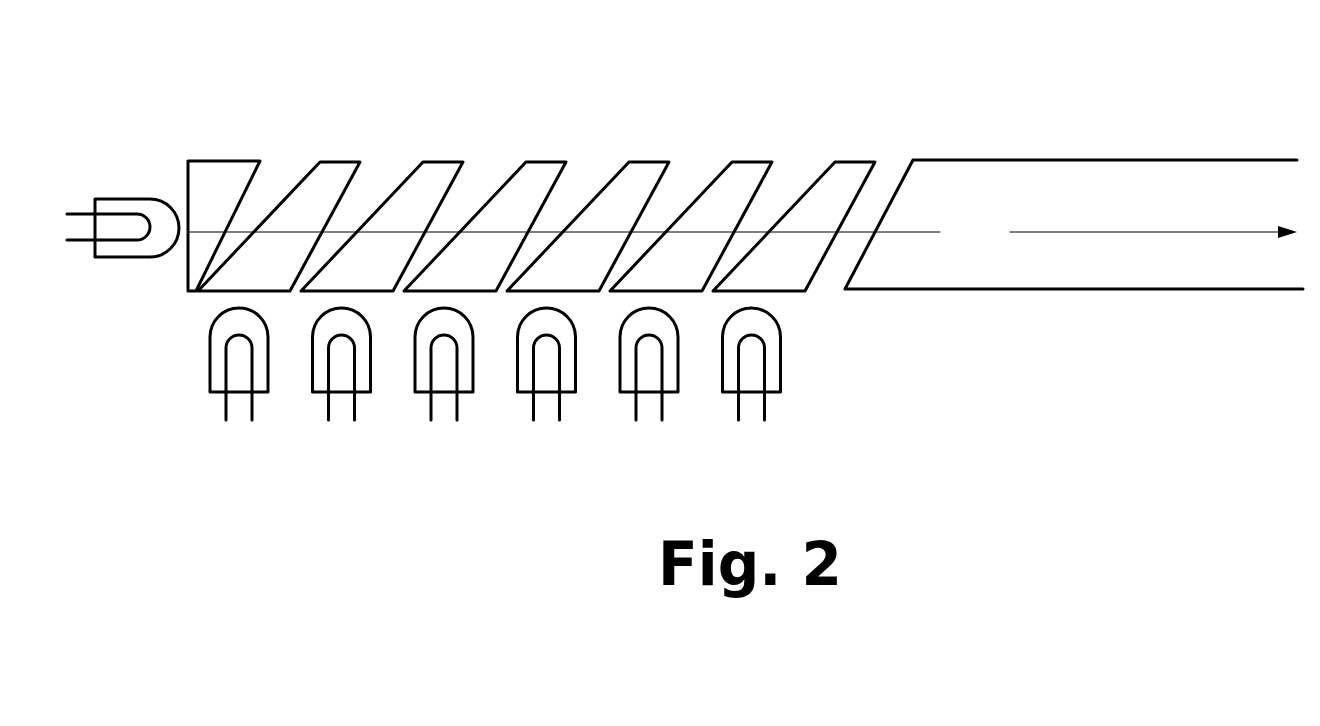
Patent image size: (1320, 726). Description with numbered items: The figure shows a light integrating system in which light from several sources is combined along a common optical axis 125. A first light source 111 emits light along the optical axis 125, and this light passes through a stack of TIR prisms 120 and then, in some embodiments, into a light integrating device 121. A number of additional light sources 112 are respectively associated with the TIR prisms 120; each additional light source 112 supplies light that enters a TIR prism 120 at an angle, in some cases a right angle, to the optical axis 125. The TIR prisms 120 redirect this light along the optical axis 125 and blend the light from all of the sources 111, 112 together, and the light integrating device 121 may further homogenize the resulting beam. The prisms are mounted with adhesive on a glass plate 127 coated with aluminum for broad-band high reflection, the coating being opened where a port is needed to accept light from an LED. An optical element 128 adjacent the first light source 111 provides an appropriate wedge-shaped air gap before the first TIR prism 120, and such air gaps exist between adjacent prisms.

The first light source 111 is at (117, 252).
The additional light sources 112 is at (620, 372).
The TIR prisms 120 is at (760, 172).
The light integrating device 121 is at (1072, 172).
The optical axis 125 is at (742, 233).
The glass plate 127 is at (531, 163).
The optical element 128 is at (221, 177).